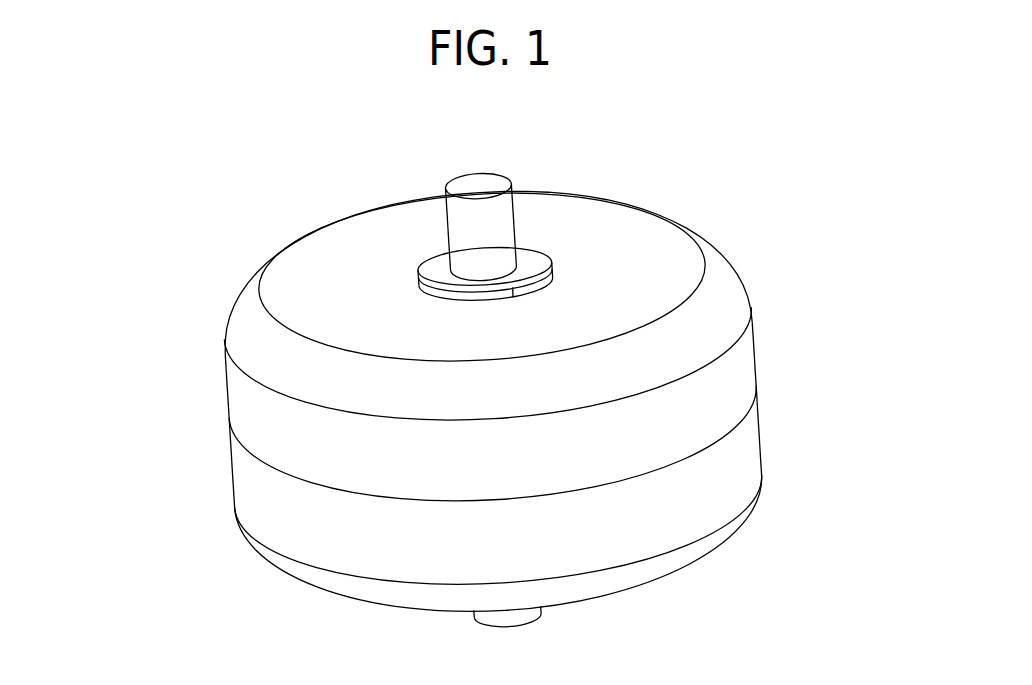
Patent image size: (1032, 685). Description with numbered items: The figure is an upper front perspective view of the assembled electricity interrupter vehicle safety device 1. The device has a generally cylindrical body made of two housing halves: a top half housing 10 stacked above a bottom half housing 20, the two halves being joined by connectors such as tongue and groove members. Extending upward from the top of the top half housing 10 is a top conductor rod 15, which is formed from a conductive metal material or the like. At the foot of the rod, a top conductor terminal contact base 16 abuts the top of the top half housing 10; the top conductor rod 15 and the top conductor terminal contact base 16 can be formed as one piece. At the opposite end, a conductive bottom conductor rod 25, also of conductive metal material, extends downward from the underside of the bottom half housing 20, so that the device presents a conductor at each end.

The electricity interrupter vehicle safety device 1 is at (190, 200).
The top half housing 10 is at (742, 375).
The top conductor rod 15 is at (500, 212).
The top conductor terminal contact base 16 is at (528, 267).
The bottom half housing 20 is at (733, 458).
The bottom conductor rod 25 is at (508, 615).